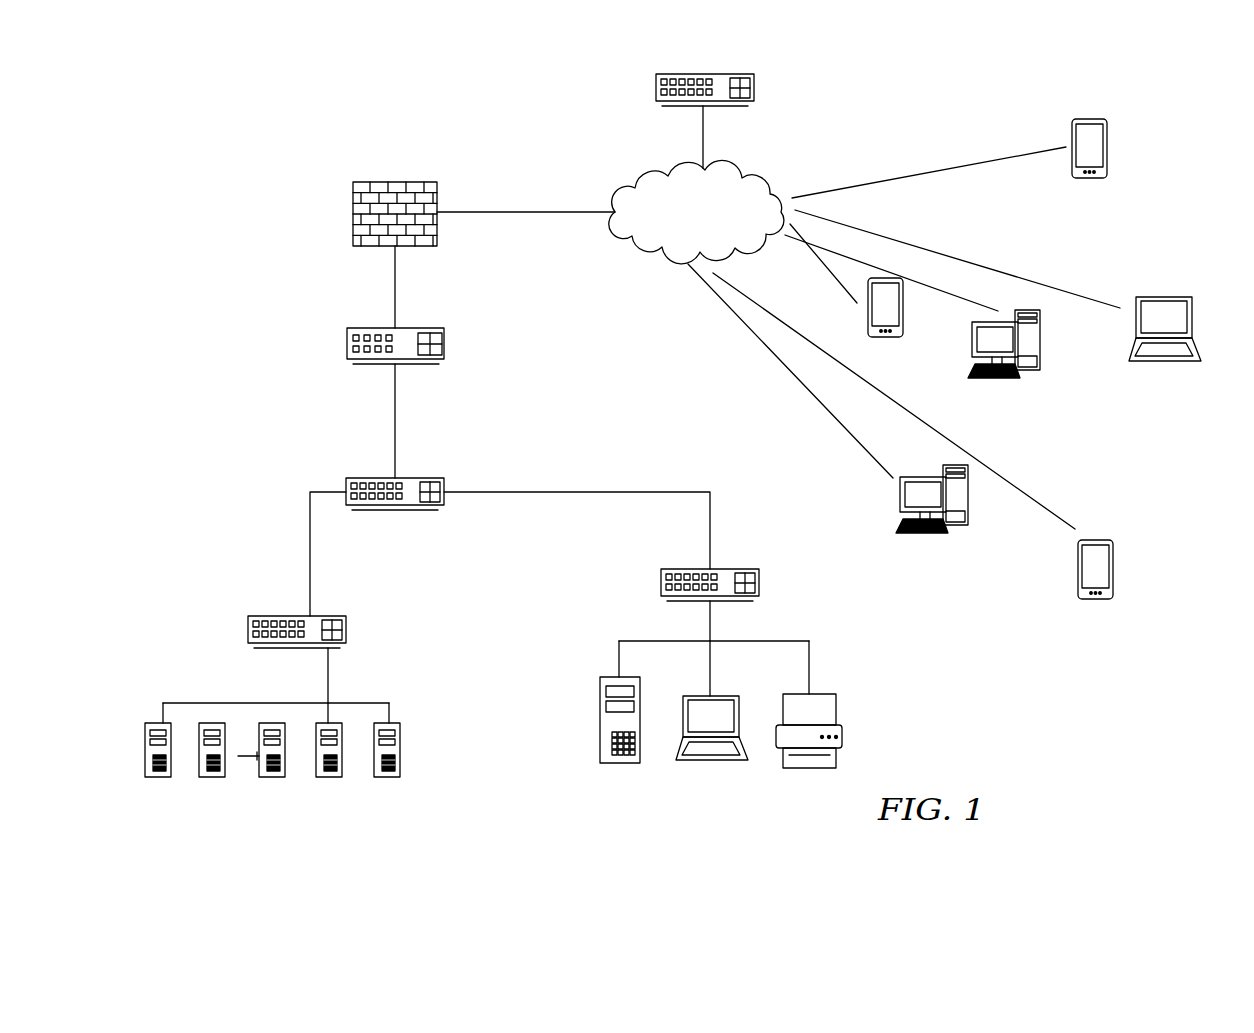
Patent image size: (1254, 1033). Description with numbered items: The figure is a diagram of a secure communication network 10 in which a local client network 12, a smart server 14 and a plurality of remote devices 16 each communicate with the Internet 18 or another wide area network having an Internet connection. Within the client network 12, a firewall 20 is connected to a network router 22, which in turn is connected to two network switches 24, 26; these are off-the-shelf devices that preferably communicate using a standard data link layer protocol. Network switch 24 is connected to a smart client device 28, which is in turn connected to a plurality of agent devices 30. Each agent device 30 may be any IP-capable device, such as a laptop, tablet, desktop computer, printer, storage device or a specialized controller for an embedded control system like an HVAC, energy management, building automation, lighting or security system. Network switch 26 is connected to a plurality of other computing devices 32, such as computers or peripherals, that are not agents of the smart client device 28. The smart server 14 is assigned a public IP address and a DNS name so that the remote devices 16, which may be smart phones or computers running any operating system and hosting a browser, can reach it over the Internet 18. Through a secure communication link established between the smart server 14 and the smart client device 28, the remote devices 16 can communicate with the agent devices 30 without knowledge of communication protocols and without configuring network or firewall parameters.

The secure communication network 10 is at (882, 137).
The local client network 12 is at (252, 382).
The smart server 14 is at (656, 86).
The remote devices 16 is at (1132, 469).
The Internet 18 is at (665, 250).
The firewall 20 is at (397, 182).
The network router 22 is at (447, 329).
The network switch 24 is at (447, 479).
The network switch 26 is at (737, 569).
The smart client device 28 is at (347, 615).
The agent devices 30 is at (305, 827).
The other computing devices 32 is at (845, 690).